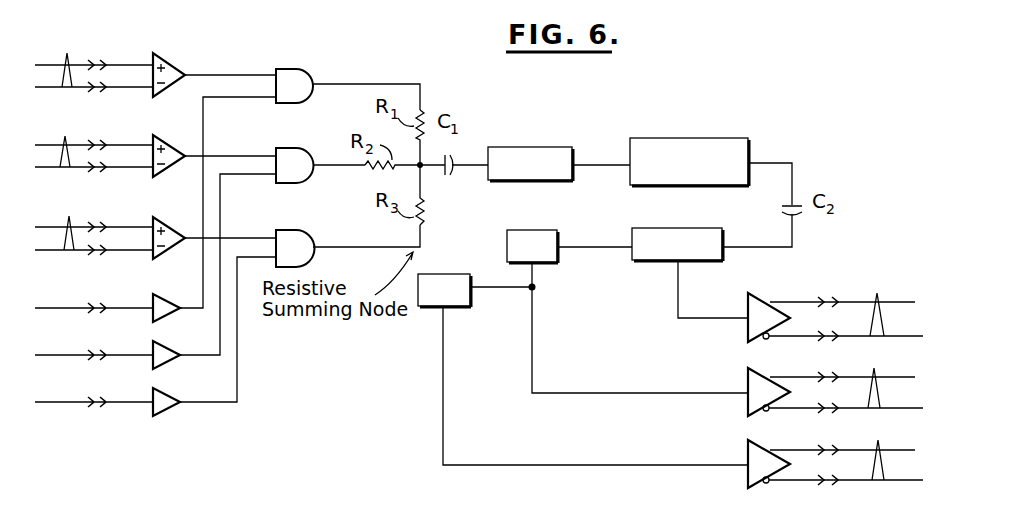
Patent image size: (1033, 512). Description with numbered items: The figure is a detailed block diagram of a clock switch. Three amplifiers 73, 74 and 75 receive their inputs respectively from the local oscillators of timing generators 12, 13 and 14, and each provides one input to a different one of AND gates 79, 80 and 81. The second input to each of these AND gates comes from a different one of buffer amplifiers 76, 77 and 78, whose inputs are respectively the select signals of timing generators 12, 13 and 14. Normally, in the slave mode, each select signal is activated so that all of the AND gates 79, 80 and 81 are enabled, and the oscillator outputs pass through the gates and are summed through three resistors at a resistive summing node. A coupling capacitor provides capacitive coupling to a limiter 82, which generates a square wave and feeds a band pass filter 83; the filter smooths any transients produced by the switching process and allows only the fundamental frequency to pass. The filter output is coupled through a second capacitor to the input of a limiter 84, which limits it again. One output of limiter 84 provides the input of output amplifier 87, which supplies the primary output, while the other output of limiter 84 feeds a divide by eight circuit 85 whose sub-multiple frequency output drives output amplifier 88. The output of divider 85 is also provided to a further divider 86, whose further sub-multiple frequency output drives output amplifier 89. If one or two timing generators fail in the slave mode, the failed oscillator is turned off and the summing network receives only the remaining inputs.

The timing generator 12 is at (91, 172).
The timing generator 13 is at (91, 236).
The timing generator 14 is at (91, 302).
The amplifier 73 is at (173, 63).
The amplifier 74 is at (168, 146).
The amplifier 75 is at (172, 222).
The buffer amplifier 76 is at (166, 308).
The buffer amplifier 77 is at (162, 352).
The buffer amplifier 78 is at (162, 398).
The AND gate 79 is at (300, 69).
The AND gate 80 is at (314, 136).
The AND gate 81 is at (306, 232).
The limiter 82 is at (537, 147).
The band pass filter 83 is at (700, 138).
The limiter 84 is at (688, 228).
The divide by 8 circuit 85 is at (556, 230).
The divider 86 is at (455, 306).
The output amplifier 87 is at (762, 298).
The output amplifier 88 is at (752, 381).
The output amplifier 89 is at (758, 460).